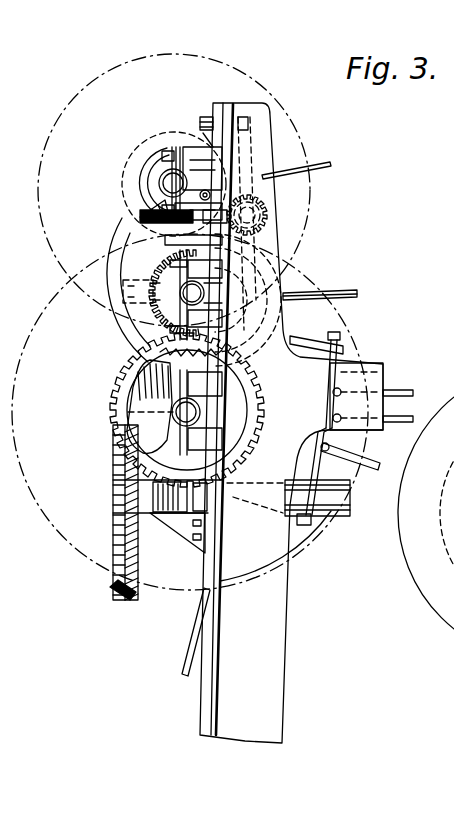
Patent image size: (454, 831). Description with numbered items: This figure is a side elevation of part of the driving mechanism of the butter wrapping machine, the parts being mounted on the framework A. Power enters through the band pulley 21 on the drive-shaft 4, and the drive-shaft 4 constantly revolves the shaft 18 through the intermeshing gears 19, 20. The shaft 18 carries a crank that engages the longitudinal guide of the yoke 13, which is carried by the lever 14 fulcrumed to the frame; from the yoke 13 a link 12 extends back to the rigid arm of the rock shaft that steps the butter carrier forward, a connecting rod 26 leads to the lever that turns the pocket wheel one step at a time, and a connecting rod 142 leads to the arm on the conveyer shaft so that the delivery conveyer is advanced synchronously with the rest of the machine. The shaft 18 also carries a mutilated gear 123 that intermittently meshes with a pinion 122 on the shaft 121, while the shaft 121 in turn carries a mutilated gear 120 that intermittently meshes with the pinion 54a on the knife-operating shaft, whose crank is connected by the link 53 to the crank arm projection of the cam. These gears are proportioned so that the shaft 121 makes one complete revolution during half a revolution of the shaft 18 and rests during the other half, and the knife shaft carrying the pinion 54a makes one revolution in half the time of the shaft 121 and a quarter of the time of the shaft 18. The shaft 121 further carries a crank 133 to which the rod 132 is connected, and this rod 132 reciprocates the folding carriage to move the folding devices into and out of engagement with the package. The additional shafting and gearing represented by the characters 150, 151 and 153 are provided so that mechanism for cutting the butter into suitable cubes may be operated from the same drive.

The framework A is at (291, 423).
The drive-shaft 4 is at (193, 181).
The link 12 is at (398, 411).
The yoke 13 is at (248, 333).
The lever 14 is at (192, 622).
The shaft 18 is at (184, 411).
The gear 19 is at (137, 148).
The gear 20 is at (25, 335).
The band pulley 21 is at (92, 82).
The connecting rod 26 is at (371, 396).
The link 53 is at (298, 163).
The pinion 54a is at (262, 215).
The mutilated gear 120 is at (160, 243).
The shaft 121 is at (157, 303).
The pinion 122 is at (240, 268).
The mutilated gear 123 is at (128, 366).
The rod 132 is at (320, 293).
The crank 133 is at (150, 287).
The connecting rod 142 is at (335, 428).
The shafting and gearing 150 is at (330, 513).
The shafting and gearing 151 is at (113, 578).
The shafting and gearing 153 is at (138, 201).